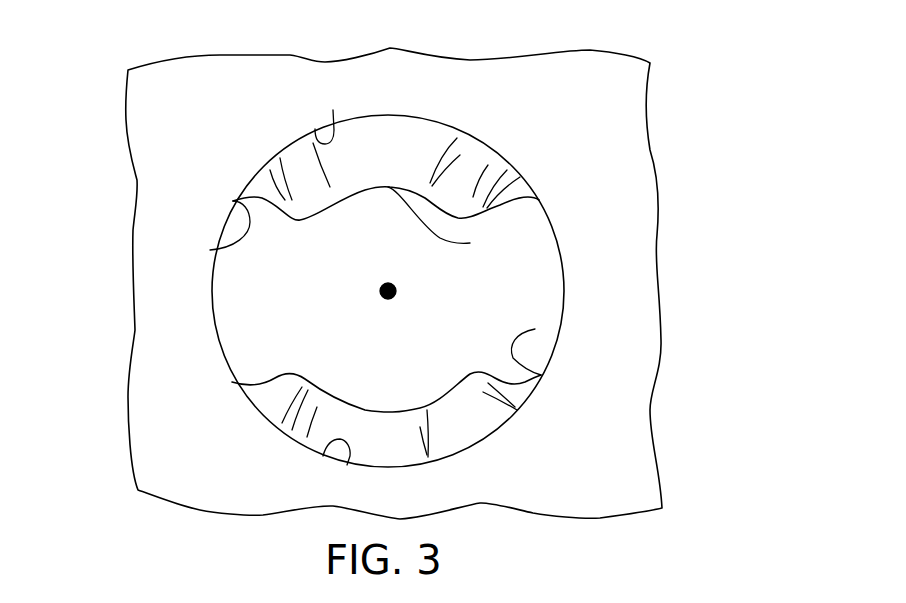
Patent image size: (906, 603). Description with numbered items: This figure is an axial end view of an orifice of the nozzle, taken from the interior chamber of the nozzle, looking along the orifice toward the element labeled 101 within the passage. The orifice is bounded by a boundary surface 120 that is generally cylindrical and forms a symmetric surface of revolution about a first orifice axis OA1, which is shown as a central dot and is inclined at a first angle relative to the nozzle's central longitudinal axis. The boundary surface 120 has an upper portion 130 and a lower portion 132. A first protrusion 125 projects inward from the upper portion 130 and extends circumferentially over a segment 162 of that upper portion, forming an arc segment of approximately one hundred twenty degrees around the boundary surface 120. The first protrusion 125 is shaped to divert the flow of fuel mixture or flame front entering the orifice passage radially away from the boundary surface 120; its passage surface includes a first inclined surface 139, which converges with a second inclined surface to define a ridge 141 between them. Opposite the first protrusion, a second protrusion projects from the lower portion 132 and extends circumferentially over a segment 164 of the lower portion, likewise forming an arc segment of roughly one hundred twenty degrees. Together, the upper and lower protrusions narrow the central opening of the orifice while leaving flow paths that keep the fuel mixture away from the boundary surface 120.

The optical element 101 is at (285, 318).
The boundary surface 120 is at (224, 318).
The first protrusion 125 is at (353, 132).
The upper portion 130 is at (210, 250).
The lower portion 132 is at (535, 329).
The first inclined surface 139 is at (409, 167).
The ridge 141 is at (470, 243).
The segment 162 is at (333, 110).
The segment 164 is at (347, 465).
The first orifice axis OA1 is at (385, 283).